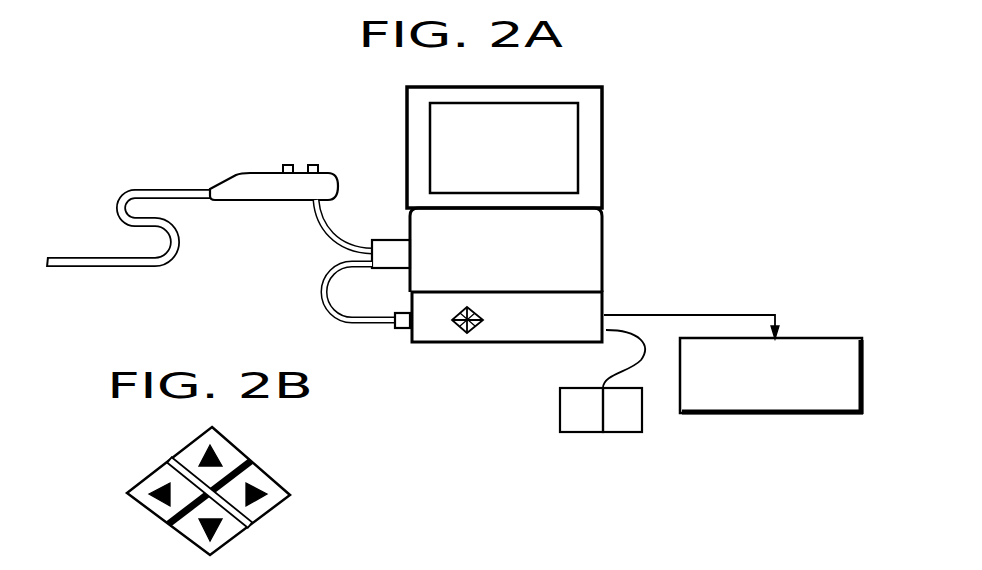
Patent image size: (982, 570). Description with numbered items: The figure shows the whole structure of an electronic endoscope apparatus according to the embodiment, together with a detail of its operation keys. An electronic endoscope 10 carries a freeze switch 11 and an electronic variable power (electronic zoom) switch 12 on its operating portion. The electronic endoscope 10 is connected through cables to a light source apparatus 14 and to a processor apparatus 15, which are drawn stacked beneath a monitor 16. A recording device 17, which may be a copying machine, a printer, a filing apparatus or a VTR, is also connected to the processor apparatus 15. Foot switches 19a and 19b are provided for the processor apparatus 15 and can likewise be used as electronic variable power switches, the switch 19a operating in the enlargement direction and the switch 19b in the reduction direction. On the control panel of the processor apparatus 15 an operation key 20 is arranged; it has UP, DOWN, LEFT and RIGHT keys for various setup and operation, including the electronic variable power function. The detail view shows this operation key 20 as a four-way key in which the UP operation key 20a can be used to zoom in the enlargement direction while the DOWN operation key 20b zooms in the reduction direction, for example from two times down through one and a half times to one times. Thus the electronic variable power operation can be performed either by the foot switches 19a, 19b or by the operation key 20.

In FIG. 2A, the electronic endoscope 10 is at (238, 188).
In FIG. 2A, the freeze switch 11 is at (313, 165).
In FIG. 2A, the electronic variable power switch 12 is at (287, 165).
In FIG. 2A, the light source apparatus 14 is at (593, 230).
In FIG. 2A, the processor apparatus 15 is at (593, 305).
In FIG. 2A, the monitor 16 is at (604, 134).
In FIG. 2A, the recording device 17 is at (813, 338).
In FIG. 2A, the foot switch 19a is at (580, 428).
In FIG. 2A, the foot switch 19b is at (632, 428).
In FIG. 2A, the operation key 20 is at (483, 320).
In FIG. 2B, the operation key 20 is at (243, 490).
In FIG. 2B, the UP operation key 20a is at (190, 442).
In FIG. 2B, the DOWN operation key 20b is at (237, 537).